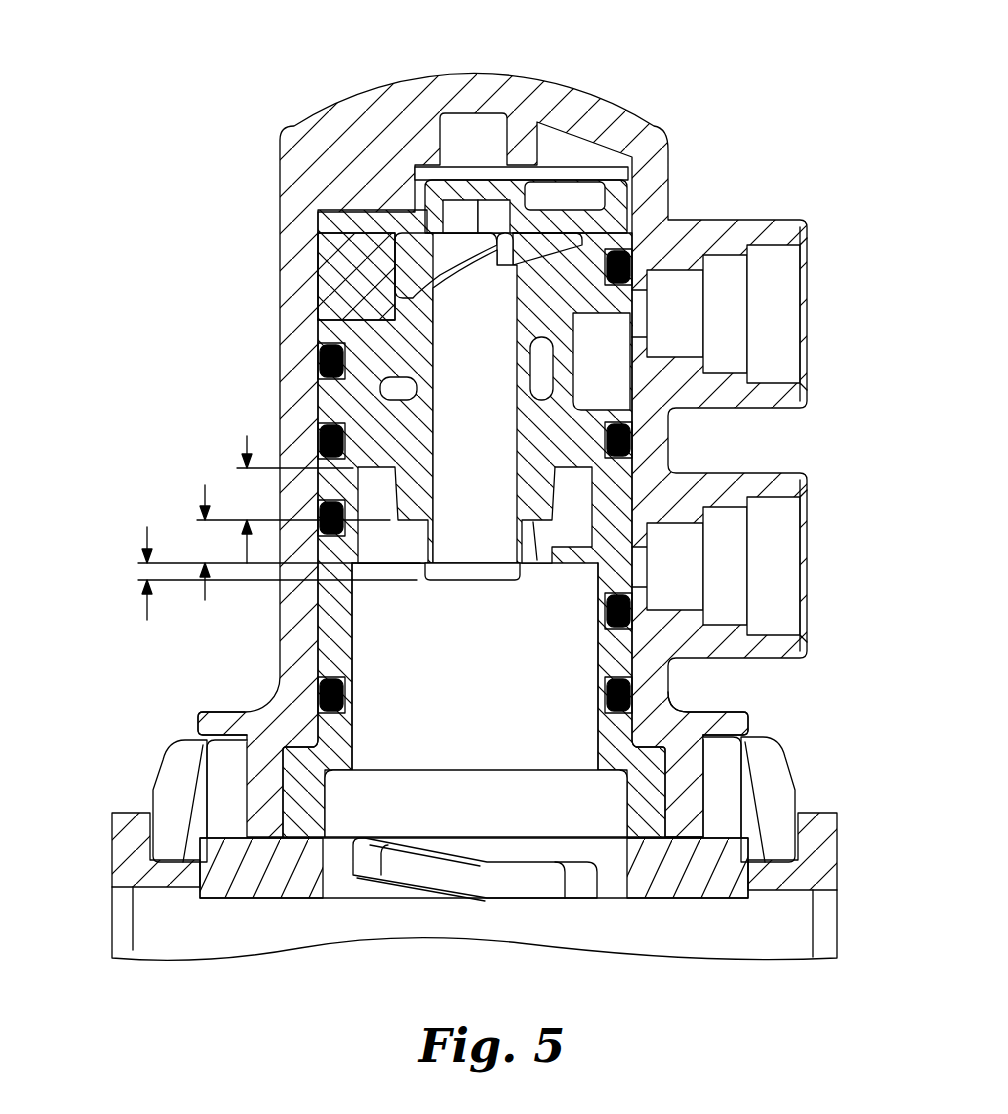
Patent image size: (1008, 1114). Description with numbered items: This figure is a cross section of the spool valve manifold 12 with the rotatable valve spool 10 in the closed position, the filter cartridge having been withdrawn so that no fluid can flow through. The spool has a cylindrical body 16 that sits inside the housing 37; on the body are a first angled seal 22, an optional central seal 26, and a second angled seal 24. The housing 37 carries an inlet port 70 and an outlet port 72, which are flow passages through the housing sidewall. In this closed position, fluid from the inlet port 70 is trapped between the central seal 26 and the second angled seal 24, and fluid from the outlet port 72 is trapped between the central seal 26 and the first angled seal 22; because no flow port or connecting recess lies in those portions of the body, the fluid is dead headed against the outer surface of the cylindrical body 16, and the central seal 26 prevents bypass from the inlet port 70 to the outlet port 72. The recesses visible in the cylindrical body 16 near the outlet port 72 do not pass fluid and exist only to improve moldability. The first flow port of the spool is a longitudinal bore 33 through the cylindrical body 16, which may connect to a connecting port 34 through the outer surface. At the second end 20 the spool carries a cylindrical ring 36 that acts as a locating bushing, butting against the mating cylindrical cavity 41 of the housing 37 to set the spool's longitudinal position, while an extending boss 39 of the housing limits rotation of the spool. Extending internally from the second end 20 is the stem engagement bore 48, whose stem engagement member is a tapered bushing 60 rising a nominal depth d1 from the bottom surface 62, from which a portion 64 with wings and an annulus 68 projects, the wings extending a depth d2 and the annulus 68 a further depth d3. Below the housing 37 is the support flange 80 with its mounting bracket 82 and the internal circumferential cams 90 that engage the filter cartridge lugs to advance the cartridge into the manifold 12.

The spool valve manifold 12 is at (502, 427).
The extending boss 39 is at (502, 427).
The housing 37 is at (550, 95).
The mating cylindrical cavity 41 is at (667, 765).
The cylindrical ring 36 is at (643, 793).
The outlet port 72 is at (783, 300).
The inlet port 70 is at (785, 576).
The cylindrical body 16 is at (328, 627).
The connecting port 34 is at (367, 287).
The rotatable valve spool 10 is at (330, 304).
The longitudinal bore 33 is at (462, 385).
The bottom surface 62 is at (398, 500).
The tapered bushing 60 is at (540, 505).
The portion 64 is at (527, 553).
The annulus 68 is at (531, 580).
The stem engagement bore 48 is at (462, 692).
The first angled seal 22 is at (318, 360).
The central seal 26 is at (632, 440).
The second angled seal 24 is at (622, 622).
The nominal depth d1 is at (247, 440).
The wing depth d2 is at (205, 489).
The annulus depth d3 is at (147, 530).
The support flange 80 is at (180, 770).
The mounting bracket 82 is at (140, 849).
The second end 20 is at (648, 903).
The internal circumferential cams 90 is at (497, 888).